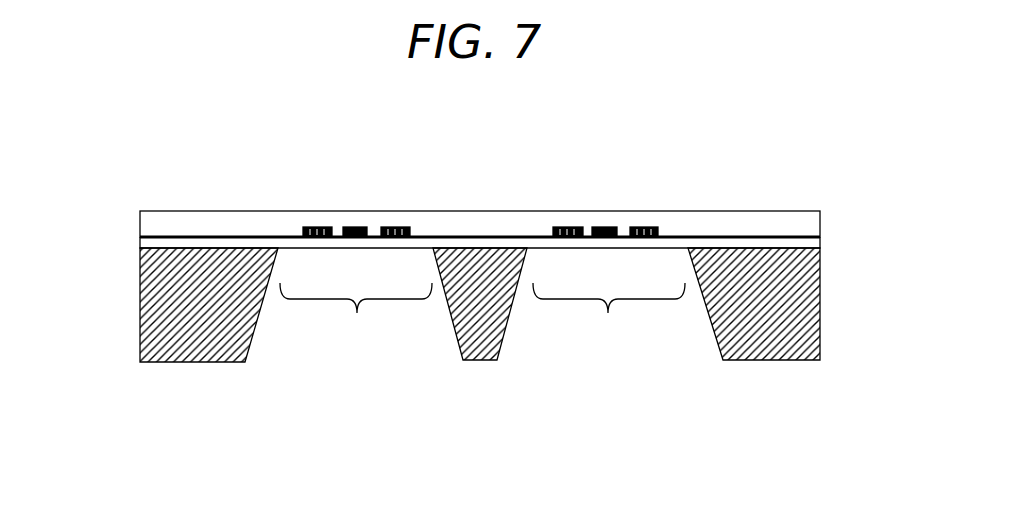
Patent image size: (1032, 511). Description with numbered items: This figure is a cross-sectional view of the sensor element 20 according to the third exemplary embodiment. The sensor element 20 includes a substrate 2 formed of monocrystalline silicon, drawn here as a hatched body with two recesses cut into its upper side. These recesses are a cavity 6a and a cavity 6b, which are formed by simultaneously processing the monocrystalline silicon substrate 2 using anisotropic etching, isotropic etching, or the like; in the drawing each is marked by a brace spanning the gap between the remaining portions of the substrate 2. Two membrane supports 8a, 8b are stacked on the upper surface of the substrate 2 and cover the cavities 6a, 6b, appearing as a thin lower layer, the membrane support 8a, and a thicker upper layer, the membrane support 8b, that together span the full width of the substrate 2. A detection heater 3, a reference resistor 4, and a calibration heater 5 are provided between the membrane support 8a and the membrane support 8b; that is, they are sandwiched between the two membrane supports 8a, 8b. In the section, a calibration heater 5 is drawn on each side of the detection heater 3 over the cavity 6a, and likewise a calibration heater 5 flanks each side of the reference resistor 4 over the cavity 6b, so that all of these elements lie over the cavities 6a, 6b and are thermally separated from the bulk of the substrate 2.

The sensor element 20 is at (178, 168).
The substrate 2 is at (197, 340).
The detection heater 3 is at (357, 227).
The reference resistor 4 is at (610, 230).
The calibration heater 5 is at (310, 227).
The cavity 6a is at (356, 319).
The cavity 6b is at (609, 319).
The membrane support 8a is at (813, 242).
The membrane support 8b is at (813, 225).